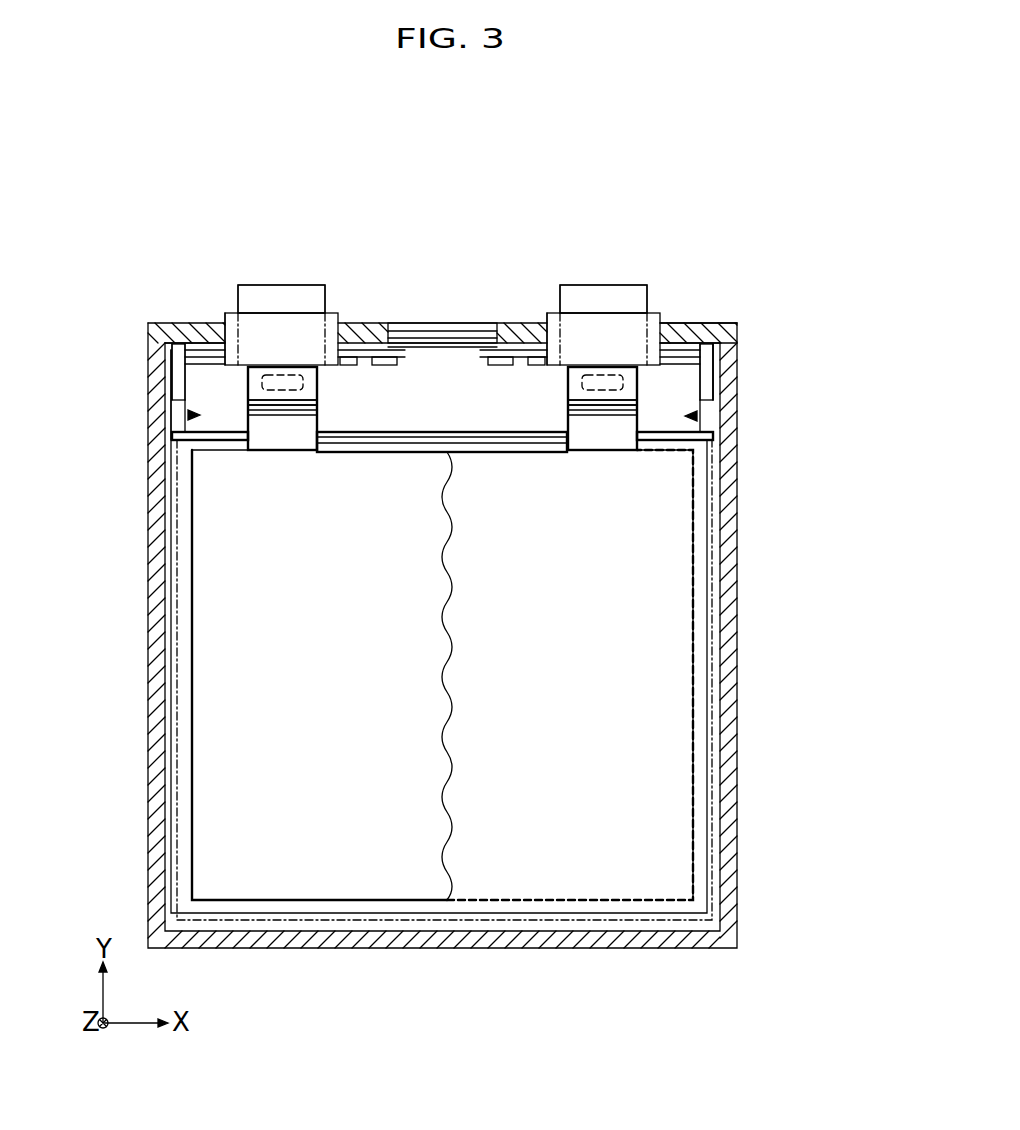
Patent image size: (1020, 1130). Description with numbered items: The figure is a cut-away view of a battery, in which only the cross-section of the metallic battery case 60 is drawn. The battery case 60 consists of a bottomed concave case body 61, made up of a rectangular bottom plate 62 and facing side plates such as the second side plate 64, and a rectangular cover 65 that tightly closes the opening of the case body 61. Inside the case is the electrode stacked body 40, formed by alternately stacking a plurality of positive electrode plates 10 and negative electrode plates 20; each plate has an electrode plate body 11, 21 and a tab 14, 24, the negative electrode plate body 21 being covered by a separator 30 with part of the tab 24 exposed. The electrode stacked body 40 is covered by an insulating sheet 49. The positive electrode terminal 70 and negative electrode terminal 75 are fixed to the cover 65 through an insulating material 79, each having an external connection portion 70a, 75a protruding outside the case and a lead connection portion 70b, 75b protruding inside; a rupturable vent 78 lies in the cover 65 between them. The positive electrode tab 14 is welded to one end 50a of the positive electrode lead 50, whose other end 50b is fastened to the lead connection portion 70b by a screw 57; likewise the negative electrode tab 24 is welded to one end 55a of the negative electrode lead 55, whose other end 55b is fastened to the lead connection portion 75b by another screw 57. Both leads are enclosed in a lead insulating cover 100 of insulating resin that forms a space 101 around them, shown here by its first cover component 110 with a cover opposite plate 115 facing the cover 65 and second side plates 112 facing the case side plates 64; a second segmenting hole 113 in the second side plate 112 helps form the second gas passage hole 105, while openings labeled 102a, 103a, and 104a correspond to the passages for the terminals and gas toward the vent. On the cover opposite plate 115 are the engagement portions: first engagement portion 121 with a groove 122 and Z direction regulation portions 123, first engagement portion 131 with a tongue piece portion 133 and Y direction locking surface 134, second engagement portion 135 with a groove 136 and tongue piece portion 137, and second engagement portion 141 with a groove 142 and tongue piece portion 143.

The positive electrode plate 10 is at (245, 704).
The electrode plate body 11 is at (192, 525).
The positive electrode tab 14 is at (268, 428).
The negative electrode plate 20 is at (648, 704).
The electrode plate body 21 is at (693, 540).
The negative electrode tab 24 is at (613, 420).
The separator 30 is at (431, 679).
The electrode stacked body 40 is at (444, 701).
The insulating sheet 49 is at (172, 602).
The positive electrode lead 50 is at (351, 430).
The one end of positive electrode lead 50a is at (317, 382).
The other end of positive electrode lead 50b is at (312, 380).
The negative electrode lead 55 is at (633, 430).
The one end of negative electrode lead 55a is at (568, 382).
The other end of negative electrode lead 55b is at (573, 380).
The screw 57 is at (312, 385).
The battery case 60 is at (504, 296).
The case body 61 is at (728, 360).
The bottom plate 62 is at (325, 948).
The second side plate 64 is at (442, 682).
The cover 65 is at (725, 330).
The positive electrode terminal 70 is at (265, 296).
The external connection portion 70a is at (281, 299).
The lead connection portion 70b is at (188, 415).
The negative electrode terminal 75 is at (603, 298).
The external connection portion 75a is at (603, 299).
The lead connection portion 75b is at (697, 416).
The rupturable vent 78 is at (455, 333).
The insulating material 79 is at (235, 330).
The lead insulating cover 100 is at (450, 325).
The space 101 is at (702, 375).
The inner insulator 102a is at (345, 350).
The inner insulator 103a is at (560, 350).
The filling port 104a is at (407, 347).
The second gas passage hole 105 is at (180, 395).
The first cover component 110 is at (450, 325).
The second side plate 112 is at (178, 365).
The second segmenting hole 113 is at (115, 388).
The cover opposite plate 115 is at (712, 345).
The first engagement portion (A) 121 is at (530, 264).
The groove 122 is at (510, 357).
The Z direction regulation portion 123 is at (512, 357).
The first engagement portion (B) 131 is at (164, 281).
The tongue piece portion 133 is at (197, 340).
The Y direction locking surface 134 is at (210, 350).
The second engagement portion (B) 135 is at (700, 281).
The groove 136 is at (695, 352).
The tongue piece portion 137 is at (672, 350).
The second engagement portion (A) 141 is at (359, 264).
The groove 142 is at (385, 357).
The tongue piece portion 143 is at (362, 357).